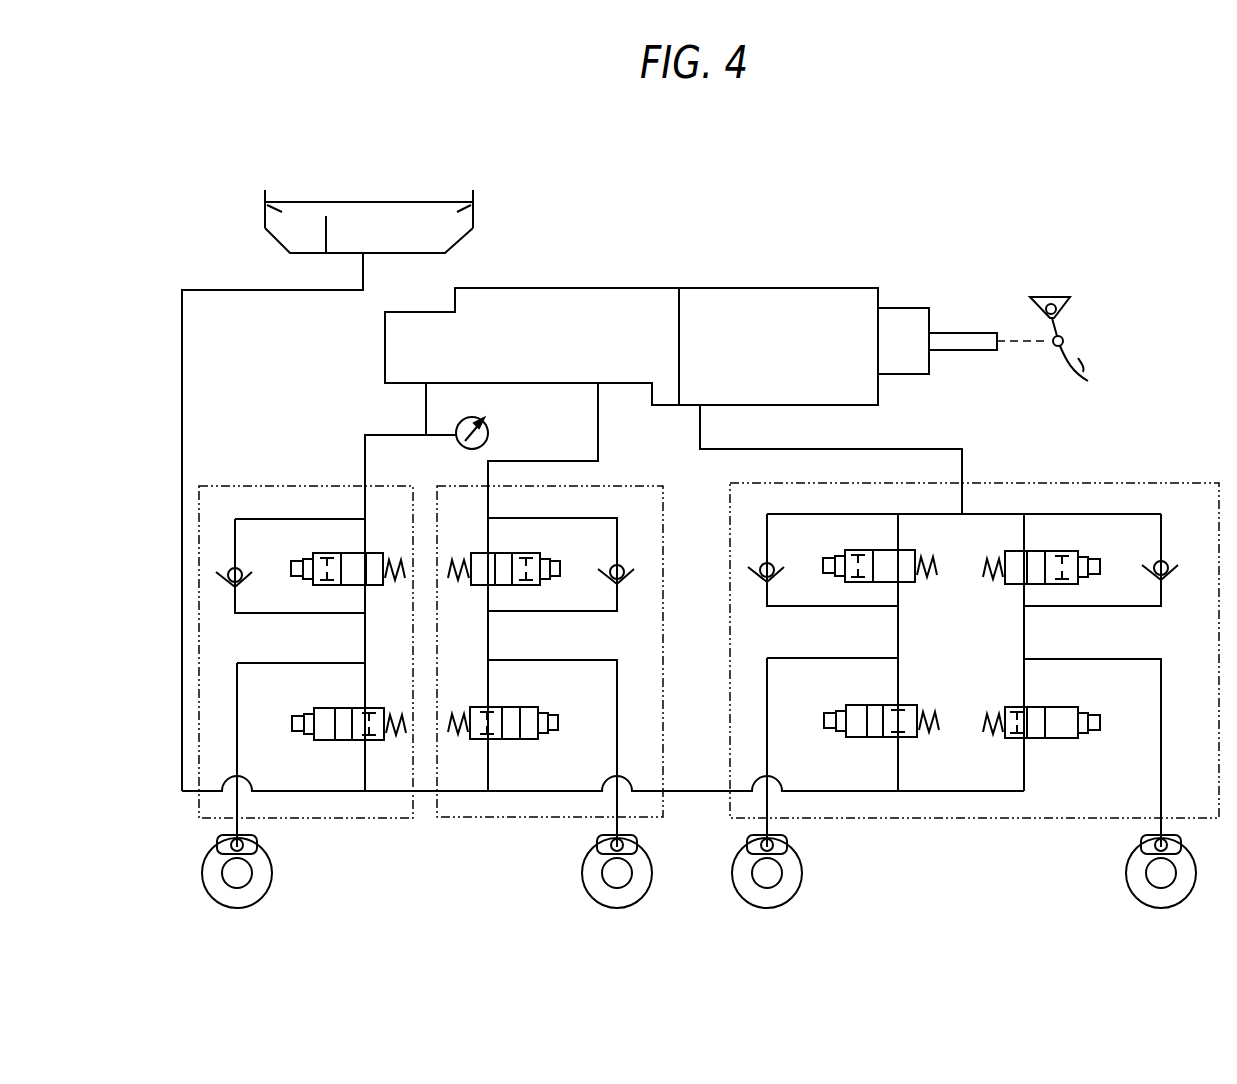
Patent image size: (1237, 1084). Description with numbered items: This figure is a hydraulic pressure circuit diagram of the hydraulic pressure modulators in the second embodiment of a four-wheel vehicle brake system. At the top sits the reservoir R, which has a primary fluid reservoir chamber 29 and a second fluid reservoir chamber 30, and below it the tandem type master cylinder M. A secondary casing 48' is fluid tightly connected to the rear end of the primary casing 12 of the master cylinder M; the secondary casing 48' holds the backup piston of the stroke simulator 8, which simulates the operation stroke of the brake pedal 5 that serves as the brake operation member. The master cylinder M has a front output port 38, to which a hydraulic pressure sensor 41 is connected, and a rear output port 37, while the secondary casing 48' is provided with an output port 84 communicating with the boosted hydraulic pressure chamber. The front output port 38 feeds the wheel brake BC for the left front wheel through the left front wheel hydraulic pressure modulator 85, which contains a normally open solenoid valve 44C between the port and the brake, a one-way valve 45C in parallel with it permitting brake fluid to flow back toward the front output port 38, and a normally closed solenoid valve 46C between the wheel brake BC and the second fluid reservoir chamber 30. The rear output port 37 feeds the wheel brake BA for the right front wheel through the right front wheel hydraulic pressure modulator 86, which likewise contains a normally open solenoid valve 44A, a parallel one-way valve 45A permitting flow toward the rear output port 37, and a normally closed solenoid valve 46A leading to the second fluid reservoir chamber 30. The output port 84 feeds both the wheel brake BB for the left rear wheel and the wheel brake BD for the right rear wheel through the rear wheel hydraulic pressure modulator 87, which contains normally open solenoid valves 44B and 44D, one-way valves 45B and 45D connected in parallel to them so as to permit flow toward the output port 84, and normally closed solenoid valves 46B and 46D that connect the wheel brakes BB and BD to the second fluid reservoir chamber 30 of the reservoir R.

The reservoir R is at (455, 240).
The primary fluid reservoir chamber 29 is at (268, 196).
The second fluid reservoir chamber 30 is at (445, 202).
The master cylinder M is at (610, 275).
The primary casing 12 is at (498, 300).
The secondary casing 48' is at (778, 318).
The stroke simulator 8 is at (910, 298).
The brake pedal 5 is at (1080, 361).
The front output port 38 is at (423, 389).
The hydraulic pressure sensor 41 is at (477, 418).
The rear output port 37 is at (597, 390).
The output port 84 is at (703, 407).
The left front wheel hydraulic pressure modulator 85 is at (266, 484).
The right front wheel hydraulic pressure modulator 86 is at (604, 485).
The rear wheel hydraulic pressure modulator 87 is at (1053, 481).
The normally open solenoid valve 44A is at (500, 553).
The normally open solenoid valve 44B is at (870, 550).
The normally open solenoid valve 44C is at (358, 553).
The normally open solenoid valve 44D is at (1060, 550).
The one-way valve 45A is at (630, 574).
The one-way valve 45B is at (753, 565).
The one-way valve 45C is at (228, 582).
The one-way valve 45D is at (1168, 566).
The normally closed solenoid valve 46A is at (505, 741).
The normally closed solenoid valve 46B is at (912, 705).
The normally closed solenoid valve 46C is at (338, 742).
The normally closed solenoid valve 46D is at (1047, 740).
The wheel brake BA is at (590, 878).
The wheel brake BB is at (792, 880).
The wheel brake BC is at (263, 877).
The wheel brake BD is at (1133, 880).